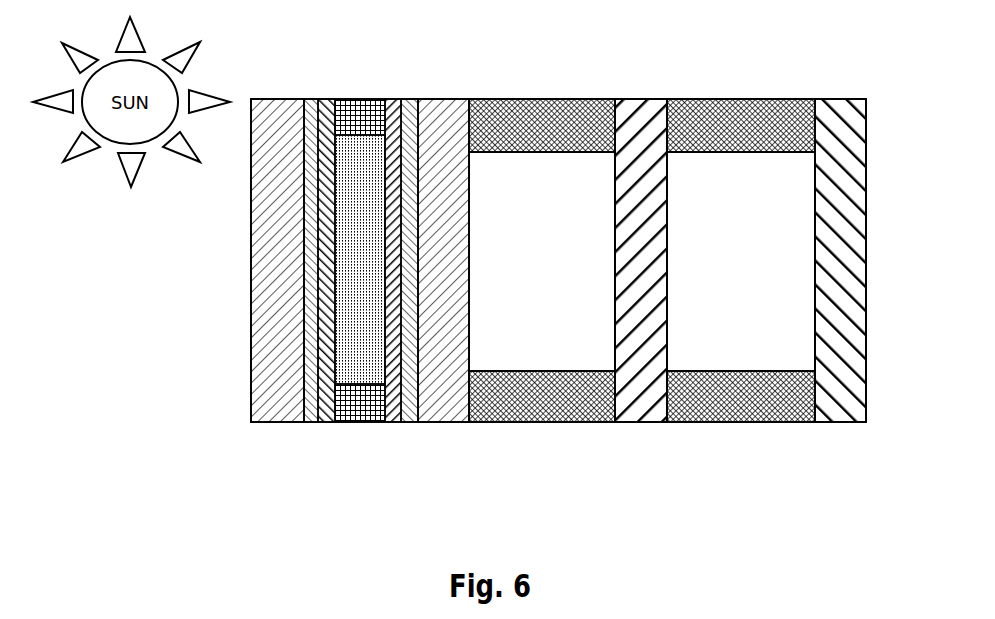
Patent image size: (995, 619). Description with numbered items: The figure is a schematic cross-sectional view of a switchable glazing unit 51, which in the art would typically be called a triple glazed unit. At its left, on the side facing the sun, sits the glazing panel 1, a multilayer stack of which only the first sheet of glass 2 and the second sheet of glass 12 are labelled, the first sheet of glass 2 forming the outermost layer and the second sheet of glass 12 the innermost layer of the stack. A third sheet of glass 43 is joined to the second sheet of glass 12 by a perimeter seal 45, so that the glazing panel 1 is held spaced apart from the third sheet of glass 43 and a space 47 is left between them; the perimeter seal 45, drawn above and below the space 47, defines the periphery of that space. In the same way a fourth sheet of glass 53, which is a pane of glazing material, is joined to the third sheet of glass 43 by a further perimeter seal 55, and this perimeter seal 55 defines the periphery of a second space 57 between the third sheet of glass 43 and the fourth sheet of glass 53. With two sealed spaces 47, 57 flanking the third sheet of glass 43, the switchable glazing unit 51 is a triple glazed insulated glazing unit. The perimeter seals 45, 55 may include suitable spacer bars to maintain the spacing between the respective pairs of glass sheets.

The glazing panel 1 is at (360, 269).
The first sheet of glass 2 is at (270, 110).
The second sheet of glass 12 is at (445, 107).
The third sheet of glass 43 is at (644, 407).
The perimeter seal 45 is at (553, 115).
The space 47 is at (542, 261).
The switchable glazing unit 51 is at (201, 399).
The fourth sheet of glass 53 is at (840, 407).
The perimeter seal 55 is at (725, 122).
The space 57 is at (741, 261).